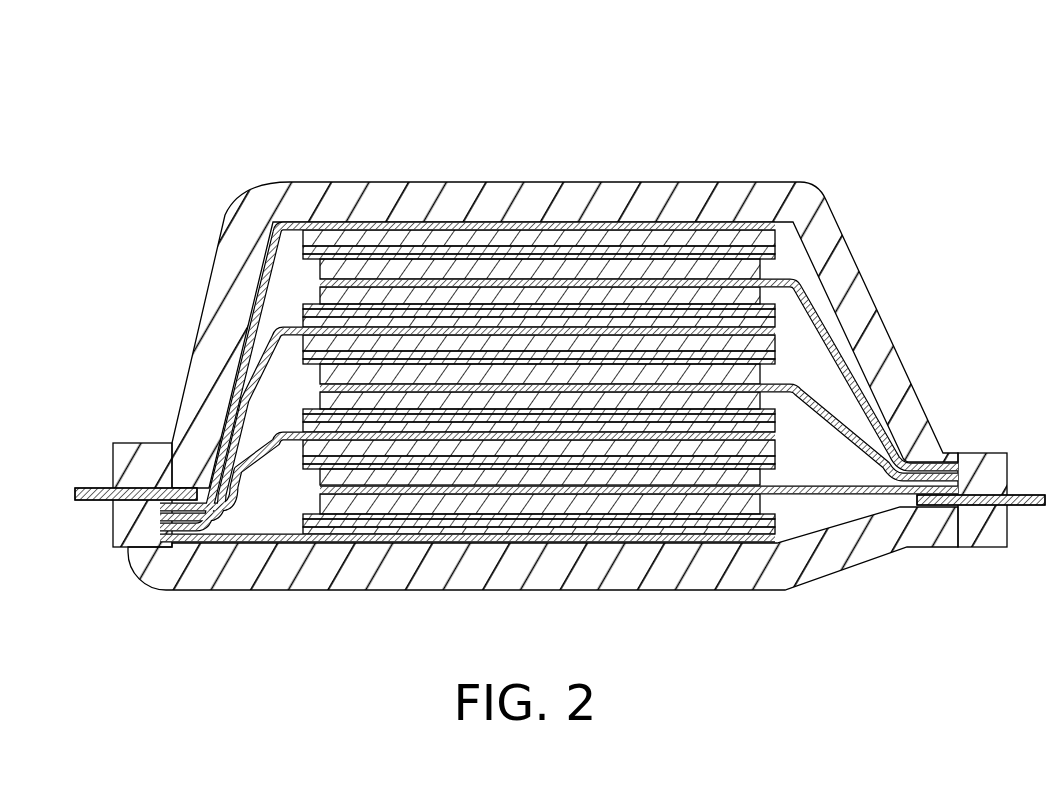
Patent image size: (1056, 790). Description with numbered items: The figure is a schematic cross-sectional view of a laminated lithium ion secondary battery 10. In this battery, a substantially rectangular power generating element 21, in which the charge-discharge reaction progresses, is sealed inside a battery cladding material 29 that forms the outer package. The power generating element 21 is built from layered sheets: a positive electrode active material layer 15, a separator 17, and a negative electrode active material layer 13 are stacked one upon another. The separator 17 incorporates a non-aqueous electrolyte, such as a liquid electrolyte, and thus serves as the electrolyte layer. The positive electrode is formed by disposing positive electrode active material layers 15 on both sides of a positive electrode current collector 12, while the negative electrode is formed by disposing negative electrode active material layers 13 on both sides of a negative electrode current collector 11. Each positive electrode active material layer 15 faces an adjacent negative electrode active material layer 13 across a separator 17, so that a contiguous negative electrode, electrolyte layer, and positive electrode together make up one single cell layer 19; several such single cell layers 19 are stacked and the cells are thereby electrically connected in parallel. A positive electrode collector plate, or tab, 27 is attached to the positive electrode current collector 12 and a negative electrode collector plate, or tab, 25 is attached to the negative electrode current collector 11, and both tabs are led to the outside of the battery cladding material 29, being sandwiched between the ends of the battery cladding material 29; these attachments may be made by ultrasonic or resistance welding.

The lithium ion secondary battery 10 is at (133, 75).
The negative electrode current collector 11 is at (582, 226).
The positive electrode current collector 12 is at (399, 240).
The negative electrode active material layer 13 is at (535, 269).
The positive electrode active material layer 15 is at (450, 250).
The separator 17 is at (492, 257).
The single cell layer 19 is at (596, 117).
The power generating element 21 is at (813, 343).
The negative electrode collector plate (tab) 25 is at (104, 486).
The positive electrode collector plate (tab) 27 is at (1022, 494).
The battery cladding material 29 is at (990, 452).